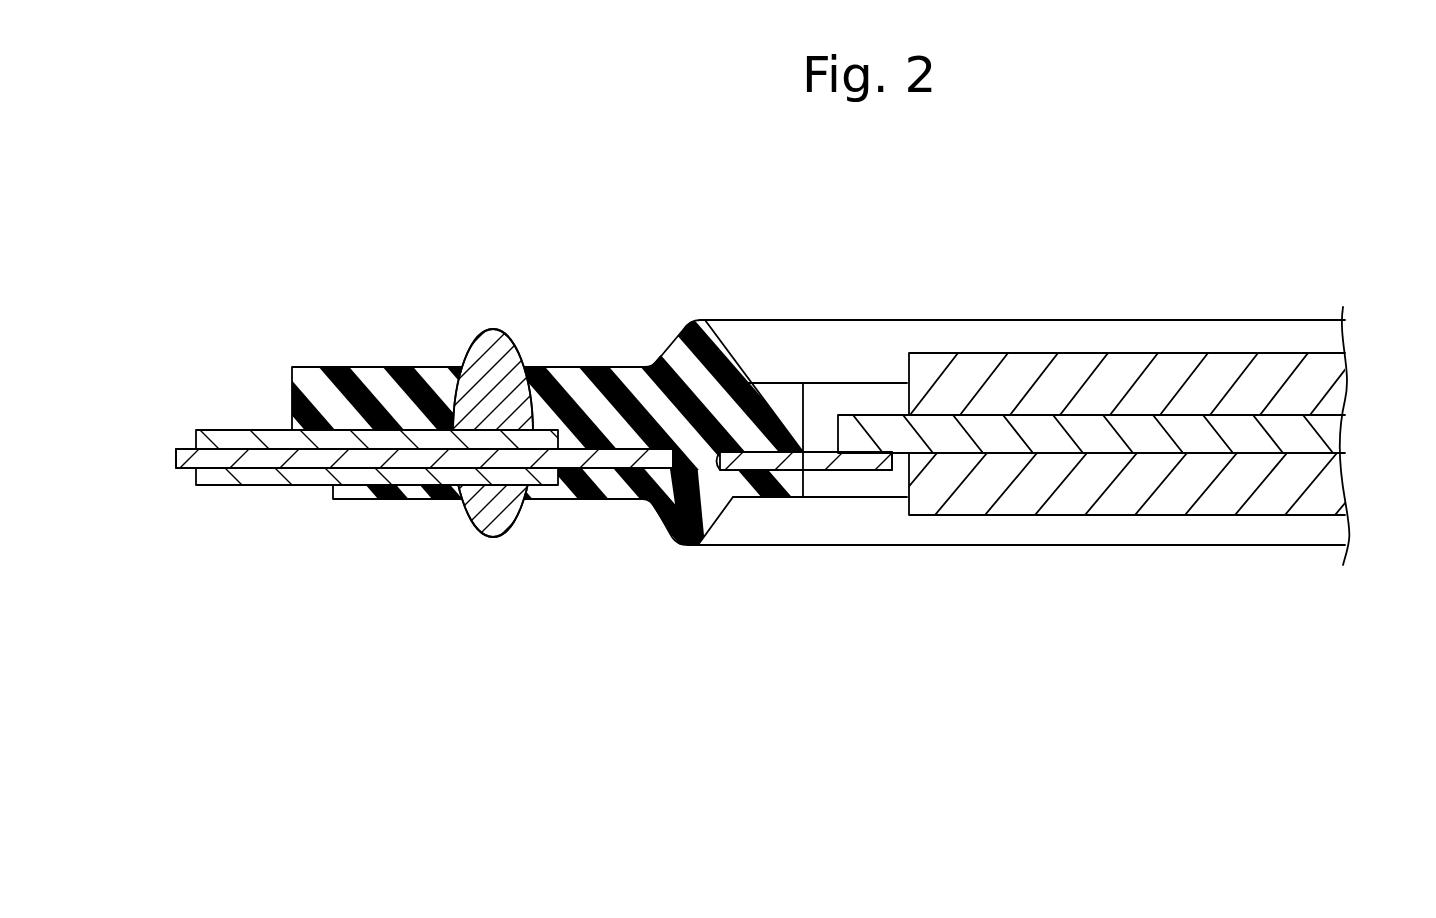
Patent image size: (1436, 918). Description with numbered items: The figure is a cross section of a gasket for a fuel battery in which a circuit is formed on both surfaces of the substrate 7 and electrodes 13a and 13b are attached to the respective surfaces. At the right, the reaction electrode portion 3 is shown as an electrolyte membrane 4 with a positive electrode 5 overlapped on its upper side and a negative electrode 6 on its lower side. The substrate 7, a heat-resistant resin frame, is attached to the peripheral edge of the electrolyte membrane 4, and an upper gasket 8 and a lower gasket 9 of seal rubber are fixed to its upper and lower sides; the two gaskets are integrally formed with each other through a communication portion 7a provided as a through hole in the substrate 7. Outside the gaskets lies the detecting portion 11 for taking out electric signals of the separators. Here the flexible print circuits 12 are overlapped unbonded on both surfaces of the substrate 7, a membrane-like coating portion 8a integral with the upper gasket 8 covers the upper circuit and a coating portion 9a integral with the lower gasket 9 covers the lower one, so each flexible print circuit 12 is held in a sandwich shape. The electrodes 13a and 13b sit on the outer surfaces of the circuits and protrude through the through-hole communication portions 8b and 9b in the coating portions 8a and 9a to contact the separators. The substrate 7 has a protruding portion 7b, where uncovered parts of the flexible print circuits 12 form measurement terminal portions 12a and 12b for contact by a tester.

The reaction electrode portion 3 is at (1300, 352).
The electrolyte membrane 4 is at (1335, 437).
The positive electrode 5 is at (1332, 395).
The negative electrode 6 is at (1333, 482).
The substrate 7 is at (420, 577).
The communication portion 7a is at (717, 457).
The protruding portion 7b is at (248, 457).
The upper gasket 8 is at (513, 331).
The coating portion 8a is at (368, 390).
The communication portion 8b is at (510, 370).
The lower gasket 9 is at (564, 569).
The coating portion 9a is at (353, 493).
The communication portion 9b is at (693, 512).
The detecting portion 11 is at (516, 431).
The flexible print circuit 12 is at (354, 429).
The measurement terminal portion 12a is at (220, 437).
The measurement terminal portion 12b is at (280, 475).
The electrode 13a is at (485, 380).
The electrode 13b is at (503, 510).